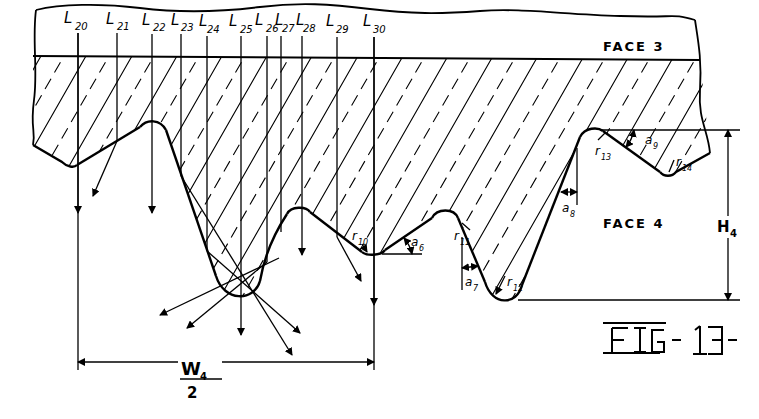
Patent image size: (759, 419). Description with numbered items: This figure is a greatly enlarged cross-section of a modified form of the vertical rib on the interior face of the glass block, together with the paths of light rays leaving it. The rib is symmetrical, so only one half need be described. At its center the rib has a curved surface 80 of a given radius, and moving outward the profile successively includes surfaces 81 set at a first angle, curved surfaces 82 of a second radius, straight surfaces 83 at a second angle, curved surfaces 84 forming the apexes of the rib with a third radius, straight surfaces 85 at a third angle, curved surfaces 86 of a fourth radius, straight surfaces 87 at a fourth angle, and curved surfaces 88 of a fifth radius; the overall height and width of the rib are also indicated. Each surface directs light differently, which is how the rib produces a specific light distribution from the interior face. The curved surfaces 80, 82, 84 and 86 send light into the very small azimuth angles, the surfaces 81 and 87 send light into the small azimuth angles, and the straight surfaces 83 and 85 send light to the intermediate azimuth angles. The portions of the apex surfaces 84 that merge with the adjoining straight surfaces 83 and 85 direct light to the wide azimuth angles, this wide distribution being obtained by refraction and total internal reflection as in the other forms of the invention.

The curved surface 80 is at (381, 257).
The surfaces 81 is at (318, 219).
The curved surfaces 82 is at (306, 210).
The straight surfaces 83 is at (274, 250).
The curved surfaces 84 is at (248, 298).
The straight surfaces 85 is at (188, 202).
The curved surfaces 86 is at (148, 125).
The straight surfaces 87 is at (128, 136).
The curved surfaces 88 is at (71, 168).